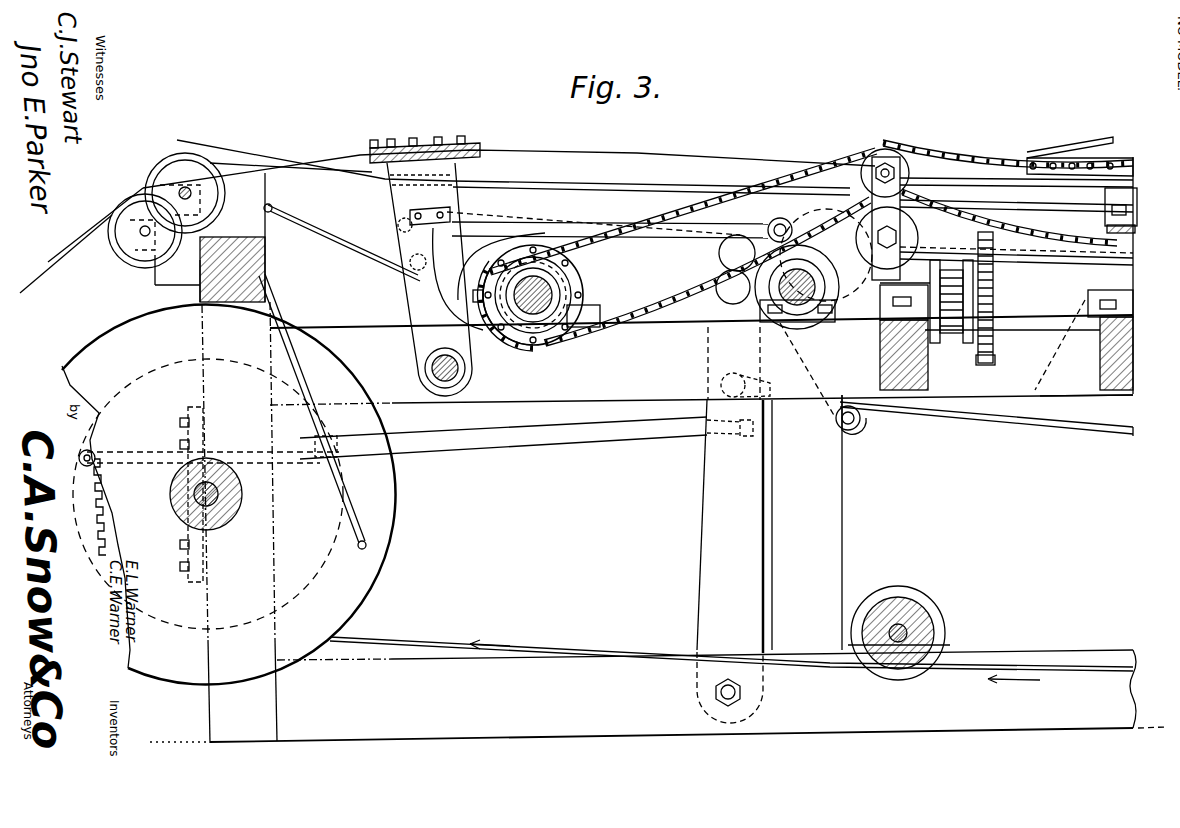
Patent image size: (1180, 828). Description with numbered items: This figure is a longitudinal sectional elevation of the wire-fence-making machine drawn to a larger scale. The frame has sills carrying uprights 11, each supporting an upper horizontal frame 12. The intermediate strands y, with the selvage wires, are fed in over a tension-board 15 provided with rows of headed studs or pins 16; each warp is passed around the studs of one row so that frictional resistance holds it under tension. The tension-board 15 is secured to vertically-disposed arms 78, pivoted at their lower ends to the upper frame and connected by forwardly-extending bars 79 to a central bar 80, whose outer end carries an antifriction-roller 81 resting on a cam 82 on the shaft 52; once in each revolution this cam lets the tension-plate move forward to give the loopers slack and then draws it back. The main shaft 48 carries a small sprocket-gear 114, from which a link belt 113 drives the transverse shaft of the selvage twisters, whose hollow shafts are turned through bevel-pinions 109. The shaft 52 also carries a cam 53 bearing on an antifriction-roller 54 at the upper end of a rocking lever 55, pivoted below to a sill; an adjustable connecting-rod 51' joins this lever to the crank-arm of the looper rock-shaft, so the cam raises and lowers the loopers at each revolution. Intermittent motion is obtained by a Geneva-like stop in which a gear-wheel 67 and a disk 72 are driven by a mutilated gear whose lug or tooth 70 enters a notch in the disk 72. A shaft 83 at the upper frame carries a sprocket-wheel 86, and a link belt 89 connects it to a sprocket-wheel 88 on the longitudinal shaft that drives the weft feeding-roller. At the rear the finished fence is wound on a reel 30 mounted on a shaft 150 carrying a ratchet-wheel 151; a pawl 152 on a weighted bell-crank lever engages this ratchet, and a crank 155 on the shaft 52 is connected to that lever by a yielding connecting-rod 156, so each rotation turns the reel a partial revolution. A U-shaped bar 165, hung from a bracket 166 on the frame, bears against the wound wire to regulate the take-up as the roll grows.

The headed studs or pins 16 is at (437, 137).
The tension-board 15 is at (470, 148).
The intermediate strands y is at (632, 159).
The cam 53 is at (817, 210).
The link belt 113 is at (990, 138).
The bevel-pinion 109 is at (1118, 138).
The antifriction-roller 81 is at (773, 221).
The central bar 80 is at (610, 230).
The curved arm 79 is at (477, 268).
The sprocket-wheel 88 is at (1003, 232).
The bracket 166 is at (284, 268).
The vertically-disposed arms 78 is at (412, 292).
The small sprocket-gear 114 is at (650, 327).
The antifriction-roller 54 is at (730, 290).
The main shaft 48 is at (535, 300).
The shaft 52 is at (800, 300).
The cam 82 is at (816, 317).
The shaft 83 is at (1080, 300).
The sprocket-wheel 86 is at (994, 357).
The disk 72 is at (937, 303).
The gear-wheel 67 is at (952, 343).
The link belt 89 is at (990, 362).
The upper horizontal frame 12 is at (1082, 385).
The adjustable connecting-rod 51' is at (986, 426).
The crank 155 is at (860, 415).
The yielding connecting-rod 156 is at (510, 442).
The pawl 152 is at (100, 447).
The ratchet-wheel 151 is at (100, 495).
The shaft 150 is at (199, 503).
The U-shaped bar 165 is at (372, 542).
The winding-reel 30 is at (372, 575).
The rocking lever 55 is at (703, 525).
The uprights 11 is at (836, 538).
The lug or tooth 70 is at (815, 700).